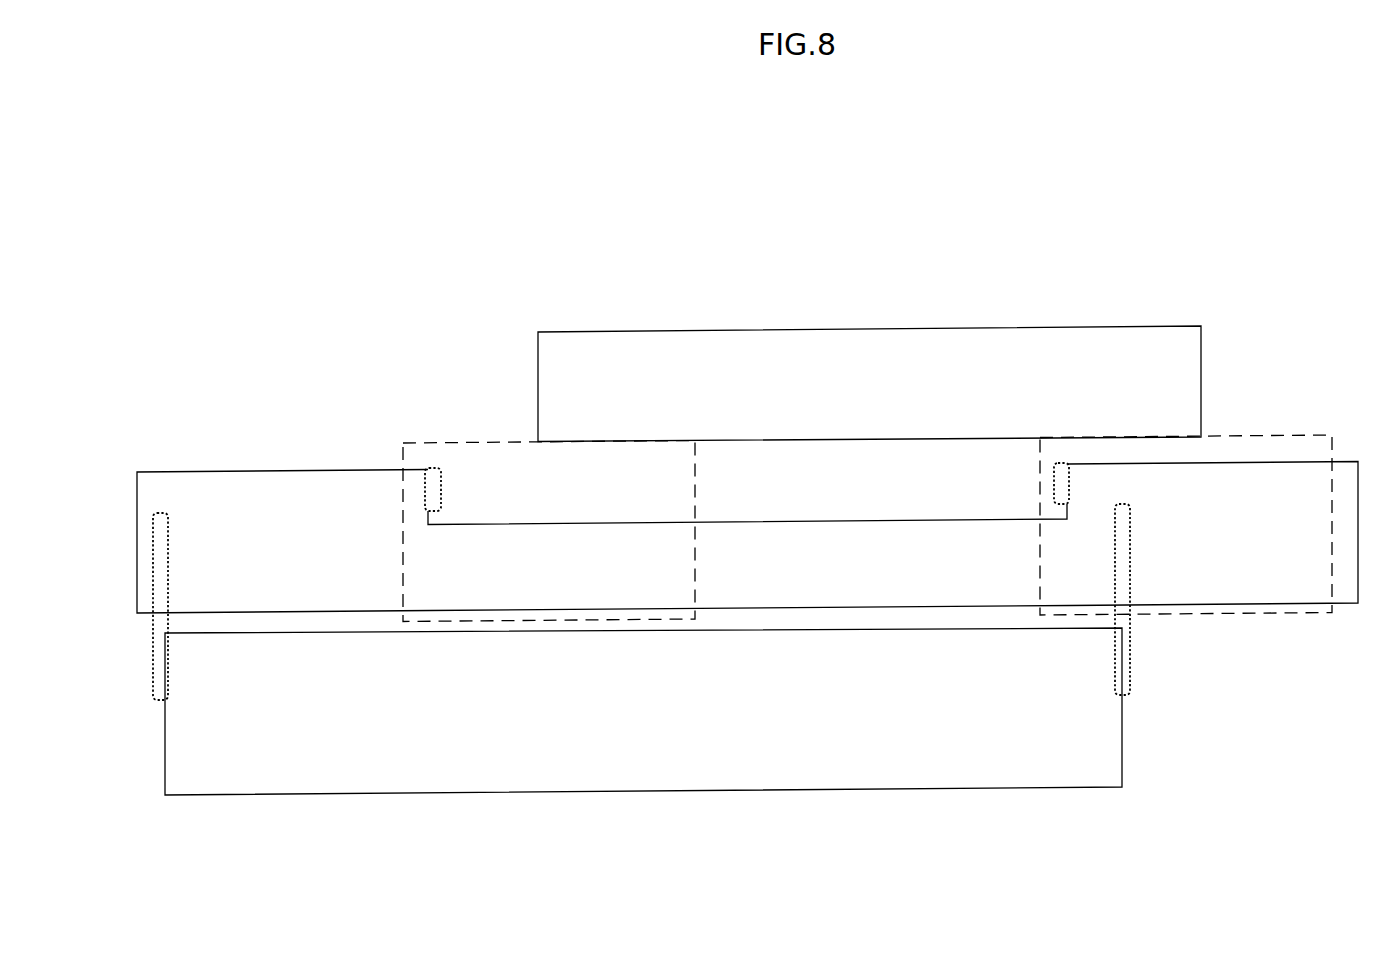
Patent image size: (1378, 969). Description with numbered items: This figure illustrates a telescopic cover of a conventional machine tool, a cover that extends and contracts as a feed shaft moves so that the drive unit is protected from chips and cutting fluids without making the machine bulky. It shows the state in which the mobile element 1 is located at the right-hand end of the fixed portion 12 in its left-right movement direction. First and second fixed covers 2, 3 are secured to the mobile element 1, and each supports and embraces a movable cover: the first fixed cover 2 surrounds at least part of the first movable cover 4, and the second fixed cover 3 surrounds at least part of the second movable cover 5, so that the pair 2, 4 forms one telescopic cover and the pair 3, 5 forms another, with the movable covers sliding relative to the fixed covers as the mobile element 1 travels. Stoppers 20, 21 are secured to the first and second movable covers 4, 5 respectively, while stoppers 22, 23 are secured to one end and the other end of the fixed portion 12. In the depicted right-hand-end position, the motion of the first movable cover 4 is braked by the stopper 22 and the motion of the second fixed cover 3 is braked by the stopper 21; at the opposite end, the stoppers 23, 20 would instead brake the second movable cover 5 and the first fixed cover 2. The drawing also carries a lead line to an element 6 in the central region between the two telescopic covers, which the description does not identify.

The mobile element 1 is at (871, 328).
The first fixed cover 2 is at (510, 442).
The second fixed cover 3 is at (1229, 436).
The first movable cover 4 is at (282, 470).
The second movable cover 5 is at (1282, 462).
The element body 6 is at (815, 548).
The fixed portion 12 is at (647, 792).
The stopper 20 is at (433, 469).
The stopper 21 is at (1063, 463).
The stopper 22 is at (160, 511).
The stopper 23 is at (1123, 503).